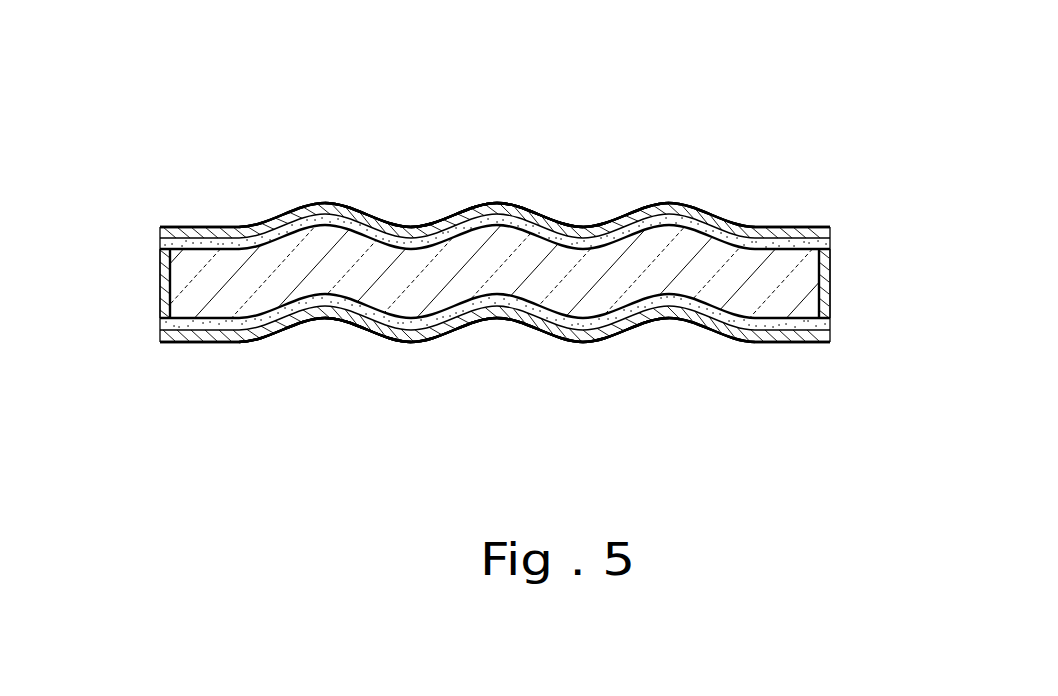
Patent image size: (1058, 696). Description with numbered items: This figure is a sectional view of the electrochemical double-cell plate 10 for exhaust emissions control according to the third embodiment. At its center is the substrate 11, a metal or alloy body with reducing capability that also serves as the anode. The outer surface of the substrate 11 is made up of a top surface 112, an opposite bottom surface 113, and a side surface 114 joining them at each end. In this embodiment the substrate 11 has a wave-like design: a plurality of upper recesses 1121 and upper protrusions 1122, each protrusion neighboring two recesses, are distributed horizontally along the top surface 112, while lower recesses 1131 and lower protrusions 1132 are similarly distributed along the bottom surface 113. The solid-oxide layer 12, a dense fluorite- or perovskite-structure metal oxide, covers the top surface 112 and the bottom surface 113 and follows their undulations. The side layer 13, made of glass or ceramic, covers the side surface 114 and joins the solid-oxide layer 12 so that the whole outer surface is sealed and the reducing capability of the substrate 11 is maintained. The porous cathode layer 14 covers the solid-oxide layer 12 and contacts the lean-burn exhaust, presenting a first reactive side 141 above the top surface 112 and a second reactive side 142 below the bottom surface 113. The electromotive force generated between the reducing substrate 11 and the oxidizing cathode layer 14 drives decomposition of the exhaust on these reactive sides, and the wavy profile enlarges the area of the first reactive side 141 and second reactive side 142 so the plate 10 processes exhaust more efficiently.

The electrochemical double-cell plate 10 is at (224, 96).
The substrate 11 is at (779, 298).
The solid-oxide layer 12 is at (721, 227).
The side layer 13 is at (832, 278).
The cathode layer 14 is at (668, 203).
The top surface 112 is at (525, 128).
The upper recesses 1121 is at (404, 221).
The upper protrusions 1122 is at (499, 211).
The bottom surface 113 is at (438, 442).
The lower recesses 1131 is at (318, 330).
The lower protrusions 1132 is at (411, 346).
The side surface 114 is at (157, 273).
The first reactive side 141 is at (574, 215).
The second reactive side 142 is at (571, 355).